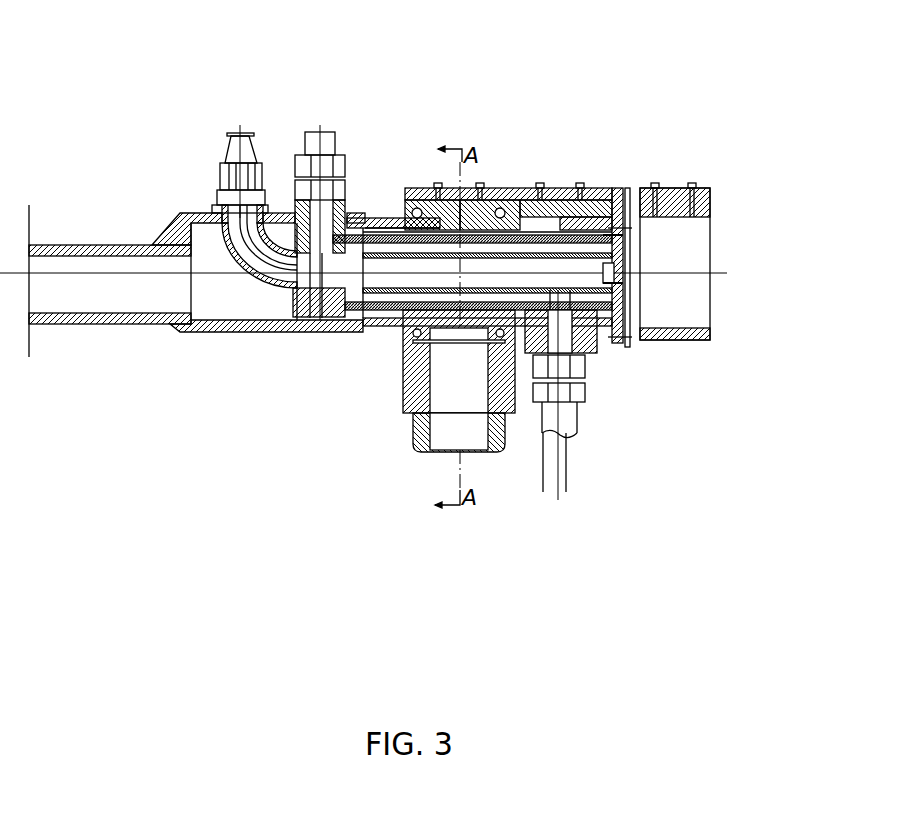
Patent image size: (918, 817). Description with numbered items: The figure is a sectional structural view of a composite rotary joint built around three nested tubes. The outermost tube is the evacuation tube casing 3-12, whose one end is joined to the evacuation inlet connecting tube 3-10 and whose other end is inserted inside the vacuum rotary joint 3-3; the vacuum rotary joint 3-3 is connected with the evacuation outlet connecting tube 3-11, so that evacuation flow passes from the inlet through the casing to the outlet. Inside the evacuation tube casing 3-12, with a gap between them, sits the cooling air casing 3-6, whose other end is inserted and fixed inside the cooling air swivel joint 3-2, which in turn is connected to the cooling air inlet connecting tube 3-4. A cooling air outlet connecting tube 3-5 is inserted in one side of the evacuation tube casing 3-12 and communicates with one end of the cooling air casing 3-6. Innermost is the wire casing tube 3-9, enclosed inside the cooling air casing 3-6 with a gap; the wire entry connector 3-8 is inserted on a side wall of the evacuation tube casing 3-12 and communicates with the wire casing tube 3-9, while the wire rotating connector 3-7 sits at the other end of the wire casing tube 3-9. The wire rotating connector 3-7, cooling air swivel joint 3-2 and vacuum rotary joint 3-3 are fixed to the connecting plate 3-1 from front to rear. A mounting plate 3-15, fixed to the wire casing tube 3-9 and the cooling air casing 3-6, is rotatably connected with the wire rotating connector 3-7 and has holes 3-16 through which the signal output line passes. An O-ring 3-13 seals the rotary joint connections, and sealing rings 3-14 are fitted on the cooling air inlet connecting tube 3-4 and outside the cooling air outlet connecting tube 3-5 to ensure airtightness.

The connecting plate 3-1 is at (528, 188).
The cooling air swivel joint 3-2 is at (570, 188).
The vacuum rotary joint 3-3 is at (470, 188).
The cooling air inlet connecting tube 3-4 is at (566, 500).
The cooling air outlet connecting tube 3-5 is at (313, 143).
The cooling air casing 3-6 is at (409, 188).
The wire rotating connector 3-7 is at (667, 188).
The wire entry connector 3-8 is at (237, 143).
The wire casing tube 3-9 is at (369, 218).
The evacuation inlet connecting tube 3-10 is at (57, 245).
The evacuation outlet connecting tube 3-11 is at (447, 418).
The evacuation tube casing 3-12 is at (200, 213).
The O-ring 3-13 is at (403, 380).
The sealing ring 3-14 is at (297, 318).
The mounting plate 3-15 is at (623, 290).
The holes 3-16 is at (628, 285).